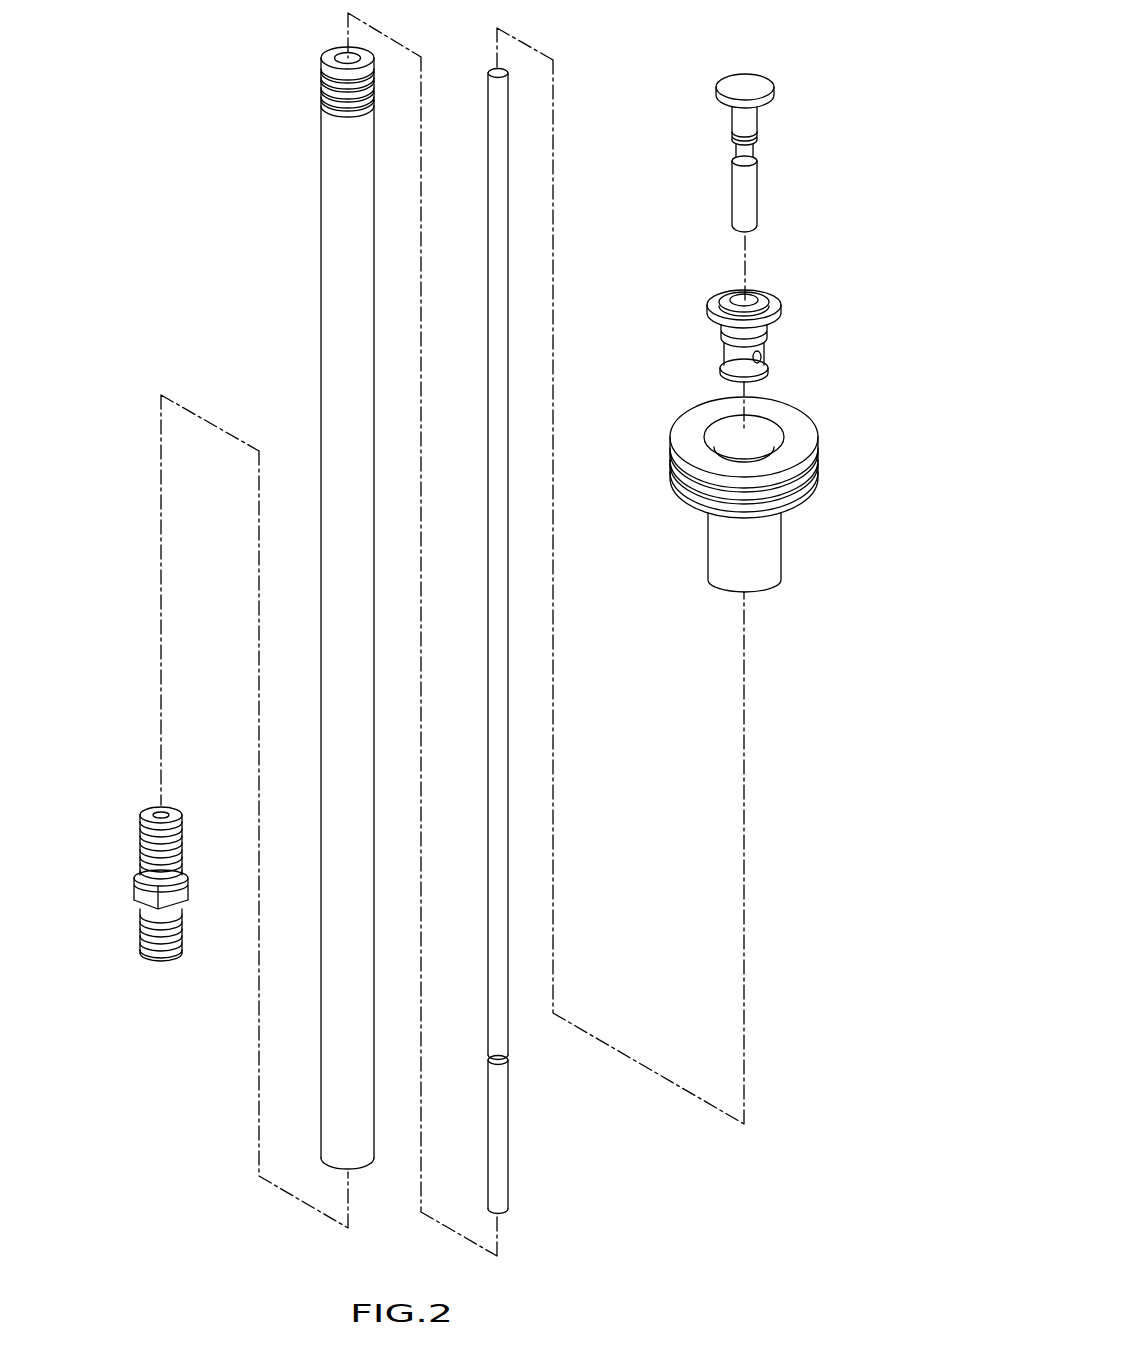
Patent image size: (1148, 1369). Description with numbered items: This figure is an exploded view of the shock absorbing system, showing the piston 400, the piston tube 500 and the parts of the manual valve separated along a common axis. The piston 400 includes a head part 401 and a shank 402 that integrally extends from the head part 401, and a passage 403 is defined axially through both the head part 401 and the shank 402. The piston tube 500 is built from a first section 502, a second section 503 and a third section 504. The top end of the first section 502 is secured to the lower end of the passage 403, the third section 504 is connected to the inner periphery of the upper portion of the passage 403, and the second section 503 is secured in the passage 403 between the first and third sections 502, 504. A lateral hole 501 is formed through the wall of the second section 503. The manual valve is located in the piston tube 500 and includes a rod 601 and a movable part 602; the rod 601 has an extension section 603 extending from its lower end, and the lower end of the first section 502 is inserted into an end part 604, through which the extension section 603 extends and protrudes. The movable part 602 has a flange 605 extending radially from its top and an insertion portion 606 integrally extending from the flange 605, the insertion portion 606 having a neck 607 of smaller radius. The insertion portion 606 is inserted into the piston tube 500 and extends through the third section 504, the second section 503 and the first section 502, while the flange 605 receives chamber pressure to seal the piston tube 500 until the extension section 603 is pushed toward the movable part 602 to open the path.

The piston 400 is at (749, 843).
The head part 401 is at (749, 480).
The shank 402 is at (710, 545).
The passage 403 is at (718, 433).
The piston tube 500 is at (536, 689).
The lateral hole 501 is at (762, 357).
The first section 502 is at (327, 315).
The second section 503 is at (729, 323).
The third section 504 is at (775, 305).
The rod 601 is at (494, 190).
The movable part 602 is at (725, 155).
The extension section 603 is at (502, 1128).
The end part 604 is at (143, 957).
The flange 605 is at (724, 89).
The insertion portion 606 is at (735, 196).
The neck 607 is at (740, 147).